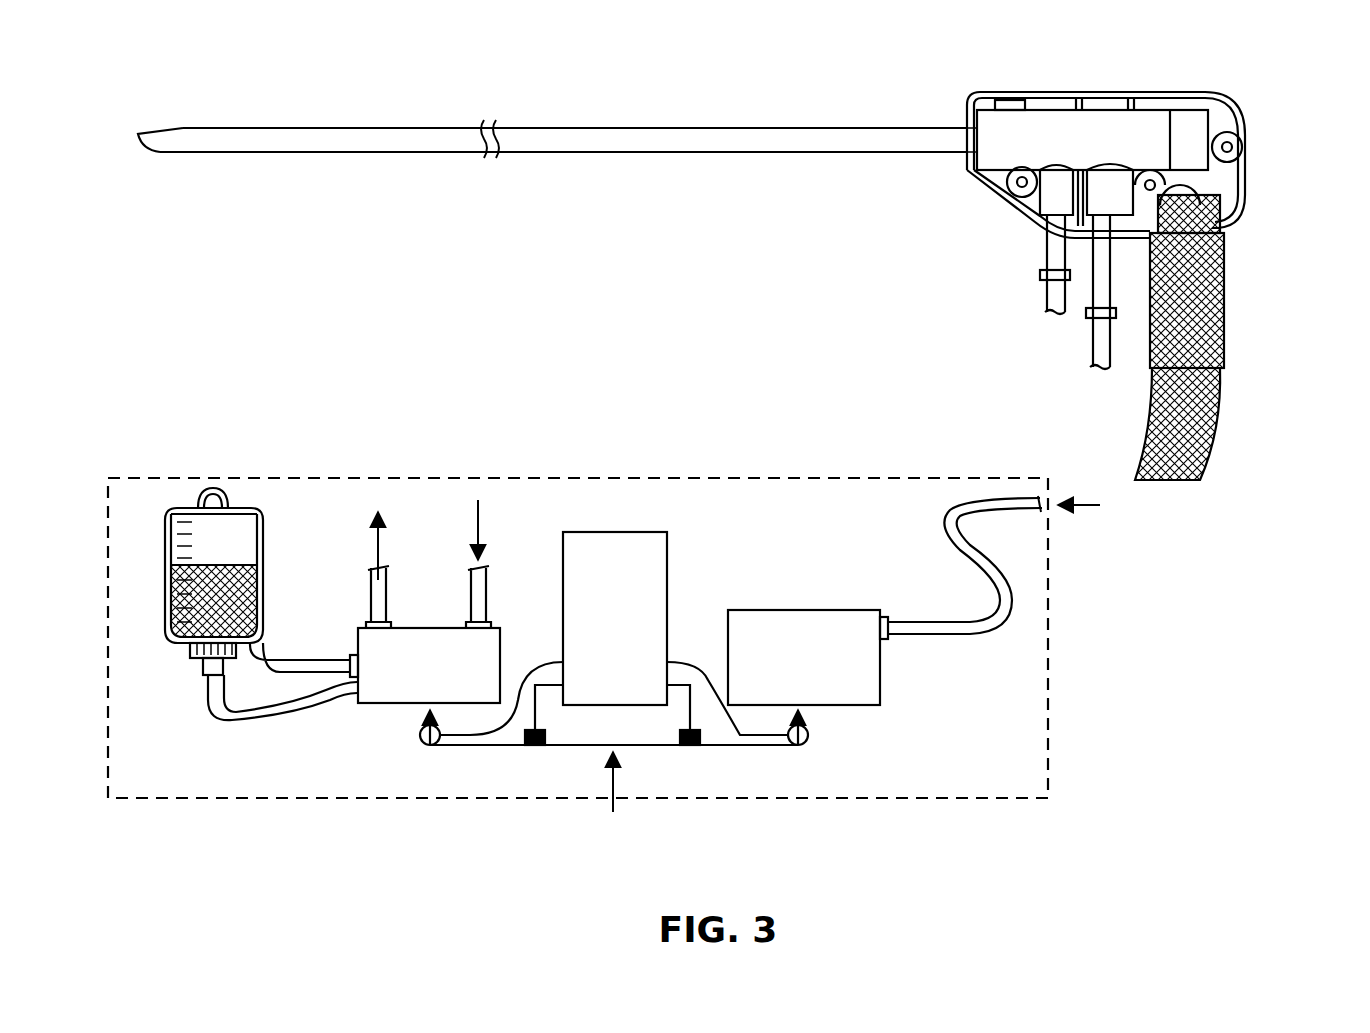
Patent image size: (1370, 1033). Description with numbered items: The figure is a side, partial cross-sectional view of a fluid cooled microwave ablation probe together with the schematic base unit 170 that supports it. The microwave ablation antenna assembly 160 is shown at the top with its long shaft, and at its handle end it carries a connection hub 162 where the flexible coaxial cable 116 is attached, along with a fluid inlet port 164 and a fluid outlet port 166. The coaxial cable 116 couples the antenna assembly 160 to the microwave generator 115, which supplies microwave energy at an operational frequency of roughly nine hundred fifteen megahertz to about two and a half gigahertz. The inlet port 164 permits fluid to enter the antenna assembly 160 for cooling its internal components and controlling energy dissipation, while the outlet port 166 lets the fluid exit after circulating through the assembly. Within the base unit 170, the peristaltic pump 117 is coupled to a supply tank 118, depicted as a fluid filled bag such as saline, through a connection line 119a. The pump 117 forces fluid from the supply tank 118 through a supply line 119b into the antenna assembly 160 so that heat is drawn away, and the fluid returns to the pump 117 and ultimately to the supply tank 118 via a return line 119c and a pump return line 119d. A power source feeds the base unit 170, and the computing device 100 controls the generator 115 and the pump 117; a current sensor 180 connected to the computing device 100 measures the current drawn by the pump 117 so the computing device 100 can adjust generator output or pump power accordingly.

The microwave ablation antenna assembly 160 is at (823, 105).
The connection hub 162 is at (1248, 110).
The fluid inlet port 164 is at (1038, 275).
The fluid outlet port 166 is at (1084, 316).
The supply line 119b is at (1045, 299).
The return line 119c is at (1098, 357).
The flexible coaxial cable 116 is at (1222, 440).
The base unit 170 is at (1054, 692).
The supply tank 118 is at (155, 505).
The connection line 119a is at (254, 720).
The pump return line 119d is at (320, 658).
The peristaltic pump 117 is at (429, 665).
The computing device 100 is at (615, 618).
The microwave generator 115 is at (804, 657).
The current sensor 180 is at (510, 752).